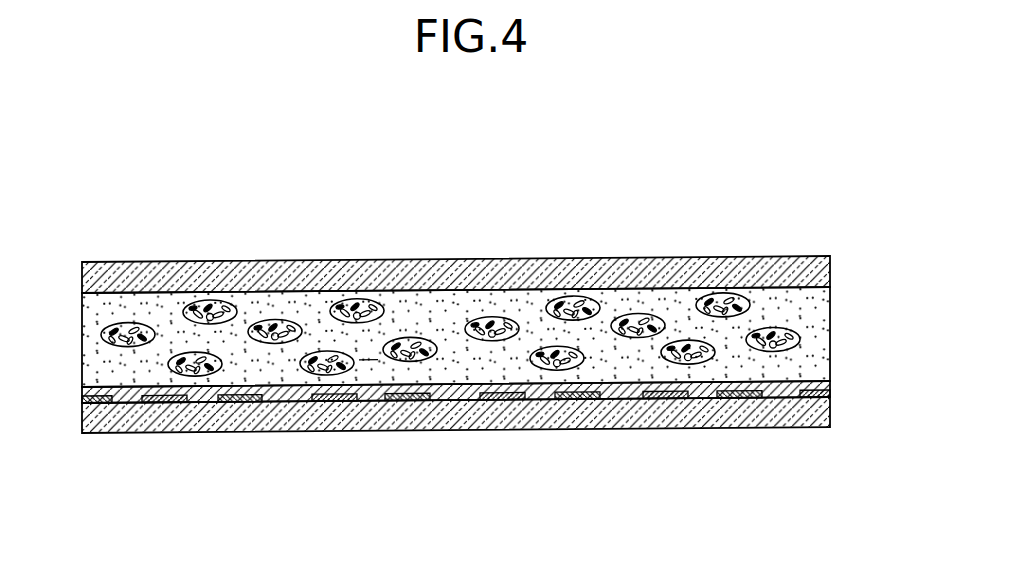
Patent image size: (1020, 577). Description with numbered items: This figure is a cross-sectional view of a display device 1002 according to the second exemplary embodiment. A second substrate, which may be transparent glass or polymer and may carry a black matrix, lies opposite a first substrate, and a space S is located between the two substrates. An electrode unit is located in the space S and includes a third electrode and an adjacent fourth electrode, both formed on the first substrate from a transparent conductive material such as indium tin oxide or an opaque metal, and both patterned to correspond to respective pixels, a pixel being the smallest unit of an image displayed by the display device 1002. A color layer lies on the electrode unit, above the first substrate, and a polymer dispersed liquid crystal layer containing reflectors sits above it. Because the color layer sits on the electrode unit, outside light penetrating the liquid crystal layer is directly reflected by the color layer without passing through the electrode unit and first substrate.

The display device 1002 is at (503, 179).
The space S is at (368, 362).